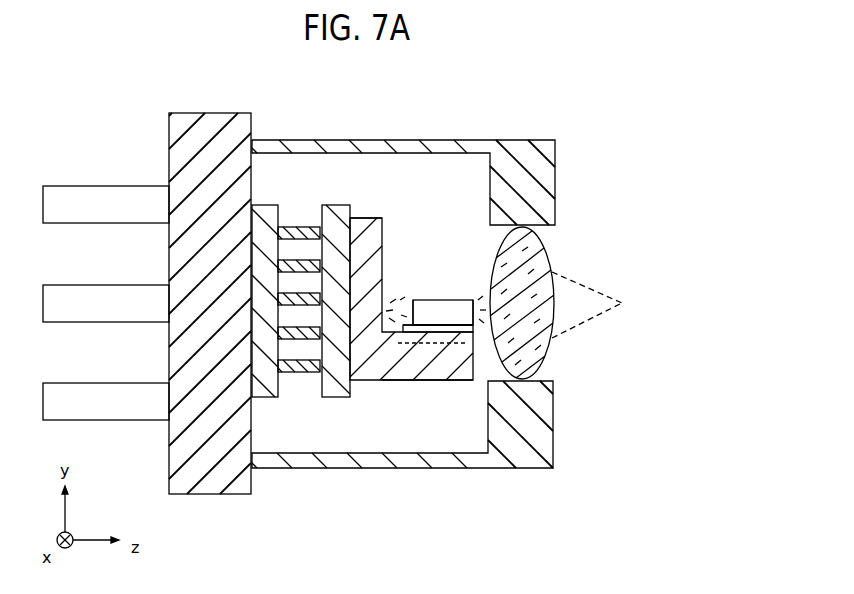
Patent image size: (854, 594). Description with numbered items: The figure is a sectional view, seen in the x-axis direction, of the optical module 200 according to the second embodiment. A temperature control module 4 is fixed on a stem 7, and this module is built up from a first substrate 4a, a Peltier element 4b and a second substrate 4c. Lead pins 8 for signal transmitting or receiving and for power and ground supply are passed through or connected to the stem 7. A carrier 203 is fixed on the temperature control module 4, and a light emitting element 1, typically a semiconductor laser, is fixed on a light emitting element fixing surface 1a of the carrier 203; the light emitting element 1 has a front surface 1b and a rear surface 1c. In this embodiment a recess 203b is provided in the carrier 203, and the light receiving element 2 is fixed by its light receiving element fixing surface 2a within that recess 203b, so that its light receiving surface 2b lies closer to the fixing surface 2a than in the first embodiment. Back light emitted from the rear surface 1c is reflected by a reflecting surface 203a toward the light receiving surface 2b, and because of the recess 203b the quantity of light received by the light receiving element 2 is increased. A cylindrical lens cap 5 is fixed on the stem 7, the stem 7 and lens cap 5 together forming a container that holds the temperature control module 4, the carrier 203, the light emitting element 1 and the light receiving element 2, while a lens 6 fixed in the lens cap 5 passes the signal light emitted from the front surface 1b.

The optical module 200 is at (184, 75).
The stem 7 is at (187, 494).
The lead pins 8 is at (65, 196).
The cylindrical lens cap 5 is at (527, 150).
The lens 6 is at (540, 368).
The temperature control module 4 is at (301, 303).
The first substrate 4a is at (268, 205).
The Peltier element 4b is at (320, 201).
The second substrate 4c is at (334, 205).
The carrier 203 is at (355, 381).
The reflecting surface 203a is at (382, 218).
The recess 203b is at (393, 380).
The light receiving element 2 is at (435, 339).
The light receiving element fixing surface 2a is at (416, 342).
The light receiving surface 2b is at (430, 346).
The light emitting element 1 is at (436, 308).
The light emitting element fixing surface 1a is at (462, 336).
The front surface 1b is at (476, 310).
The rear surface 1c is at (402, 318).